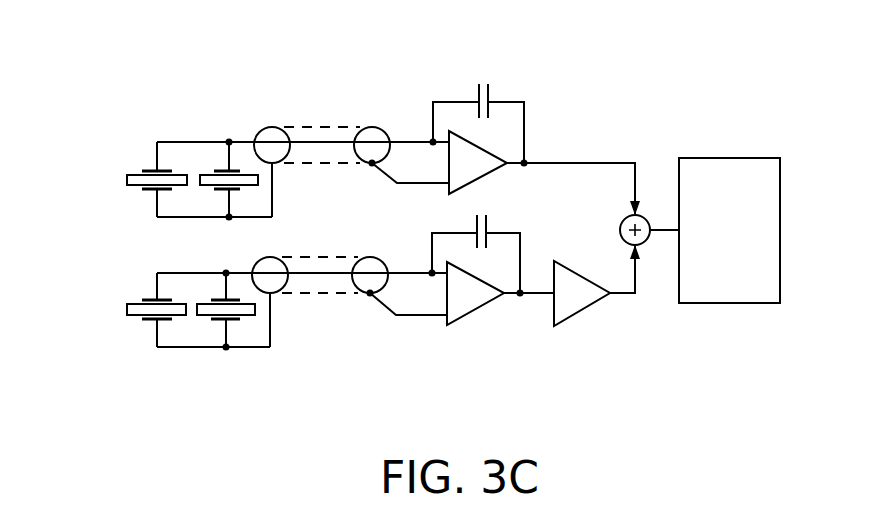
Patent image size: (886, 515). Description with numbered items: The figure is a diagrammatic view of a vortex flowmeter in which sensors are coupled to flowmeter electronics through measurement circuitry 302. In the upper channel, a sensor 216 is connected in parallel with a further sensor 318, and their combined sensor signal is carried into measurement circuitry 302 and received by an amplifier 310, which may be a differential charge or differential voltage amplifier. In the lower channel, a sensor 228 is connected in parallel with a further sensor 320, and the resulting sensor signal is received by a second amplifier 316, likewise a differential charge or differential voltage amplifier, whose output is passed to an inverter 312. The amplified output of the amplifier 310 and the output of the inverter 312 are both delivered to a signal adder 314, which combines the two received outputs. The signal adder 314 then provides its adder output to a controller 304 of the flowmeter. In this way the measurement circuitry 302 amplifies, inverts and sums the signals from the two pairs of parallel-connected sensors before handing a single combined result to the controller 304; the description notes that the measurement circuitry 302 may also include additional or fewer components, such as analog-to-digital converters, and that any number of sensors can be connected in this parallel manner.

The sensor 216 is at (127, 179).
The sensor 228 is at (127, 309).
The measurement circuitry 302 is at (268, 107).
The controller 304 is at (735, 158).
The amplifier 310 is at (545, 97).
The inverter 312 is at (588, 307).
The signal adder 314 is at (645, 216).
The amplifier 316 is at (508, 314).
The sensor 318 is at (258, 180).
The sensor 320 is at (255, 309).